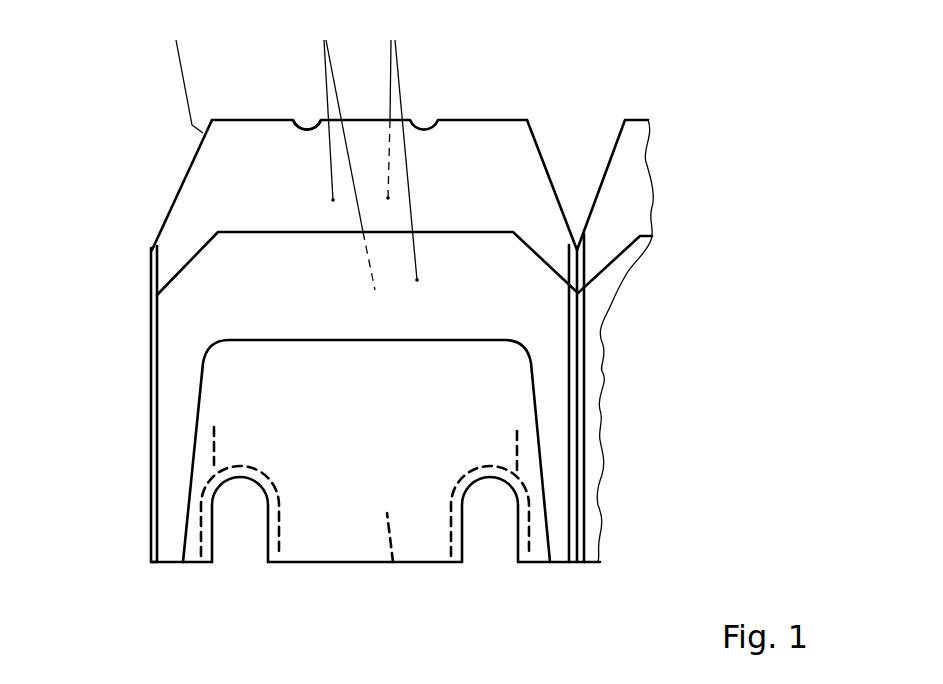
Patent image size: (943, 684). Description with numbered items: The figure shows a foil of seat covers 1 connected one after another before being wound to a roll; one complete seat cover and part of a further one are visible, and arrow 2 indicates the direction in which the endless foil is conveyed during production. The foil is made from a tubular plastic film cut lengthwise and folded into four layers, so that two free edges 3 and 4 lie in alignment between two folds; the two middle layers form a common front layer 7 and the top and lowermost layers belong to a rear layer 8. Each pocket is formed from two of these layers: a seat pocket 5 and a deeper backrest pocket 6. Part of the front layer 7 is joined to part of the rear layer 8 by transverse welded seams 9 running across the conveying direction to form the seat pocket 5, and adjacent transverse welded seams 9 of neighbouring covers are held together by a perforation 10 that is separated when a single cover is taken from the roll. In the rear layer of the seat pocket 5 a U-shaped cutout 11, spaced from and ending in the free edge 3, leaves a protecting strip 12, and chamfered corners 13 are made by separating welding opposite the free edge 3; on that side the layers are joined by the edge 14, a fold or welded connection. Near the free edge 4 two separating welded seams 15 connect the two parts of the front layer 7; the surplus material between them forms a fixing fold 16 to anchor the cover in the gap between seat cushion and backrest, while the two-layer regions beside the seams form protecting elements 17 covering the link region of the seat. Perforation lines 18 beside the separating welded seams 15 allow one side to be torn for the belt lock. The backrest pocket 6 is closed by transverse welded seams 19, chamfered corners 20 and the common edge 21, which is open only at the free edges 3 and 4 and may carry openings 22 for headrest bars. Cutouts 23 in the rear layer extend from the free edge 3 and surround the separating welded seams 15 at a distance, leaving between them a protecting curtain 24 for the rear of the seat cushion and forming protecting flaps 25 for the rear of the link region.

The seat cover 1 is at (603, 83).
The arrow 2 is at (658, 372).
The free edge 3 is at (157, 562).
The free edge 4 is at (375, 565).
The seat pocket 5 is at (186, 240).
The backrest pocket 6 is at (190, 158).
The front layer 7 is at (345, 151).
The rear layer 8 is at (401, 147).
The transverse welded seam 9 is at (155, 405).
The perforation 10 is at (580, 323).
The cutout 11 is at (395, 340).
The protecting strip 12 is at (190, 310).
The chamfered corner 13 is at (182, 268).
The edge 14 is at (462, 232).
The separating welded seam 15 is at (213, 540).
The fixing fold 16 is at (347, 535).
The protecting element 17 is at (188, 544).
The perforation line 18 is at (213, 455).
The transverse welded seam 19 is at (157, 275).
The chamfered corner 20 is at (183, 73).
The edge 21 is at (240, 120).
The opening 22 is at (311, 128).
The cutout 23 is at (265, 538).
The protecting curtain 24 is at (393, 565).
The protecting flap 25 is at (553, 528).